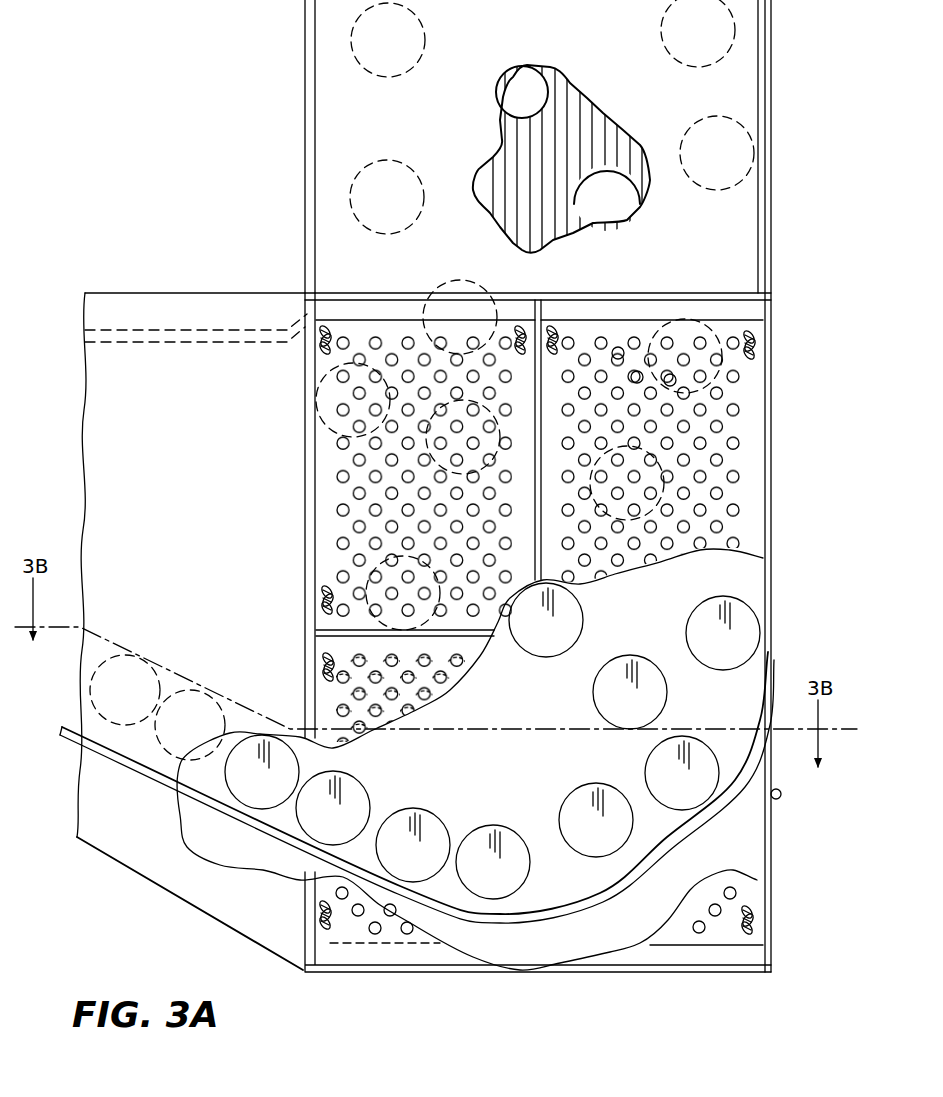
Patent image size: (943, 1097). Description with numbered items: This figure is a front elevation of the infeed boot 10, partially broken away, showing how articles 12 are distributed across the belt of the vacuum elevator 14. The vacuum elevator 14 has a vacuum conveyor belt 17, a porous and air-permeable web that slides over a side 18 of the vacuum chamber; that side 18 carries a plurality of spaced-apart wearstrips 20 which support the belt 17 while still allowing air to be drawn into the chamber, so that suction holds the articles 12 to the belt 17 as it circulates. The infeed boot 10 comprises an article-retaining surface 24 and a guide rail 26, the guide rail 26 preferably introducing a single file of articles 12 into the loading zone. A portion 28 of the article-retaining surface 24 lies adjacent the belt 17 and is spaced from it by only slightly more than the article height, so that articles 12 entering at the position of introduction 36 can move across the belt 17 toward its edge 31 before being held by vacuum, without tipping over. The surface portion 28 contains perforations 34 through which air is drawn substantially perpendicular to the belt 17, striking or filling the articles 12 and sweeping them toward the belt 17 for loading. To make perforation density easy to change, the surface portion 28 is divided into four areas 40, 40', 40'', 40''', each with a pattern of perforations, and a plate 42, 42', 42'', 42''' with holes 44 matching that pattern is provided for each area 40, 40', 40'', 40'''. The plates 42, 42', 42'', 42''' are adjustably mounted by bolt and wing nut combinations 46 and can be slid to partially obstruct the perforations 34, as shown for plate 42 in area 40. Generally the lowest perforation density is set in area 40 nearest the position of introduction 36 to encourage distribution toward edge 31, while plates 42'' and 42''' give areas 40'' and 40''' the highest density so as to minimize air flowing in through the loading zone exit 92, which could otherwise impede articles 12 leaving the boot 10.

The infeed boot 10 is at (200, 912).
The articles 12 is at (518, 100).
The vacuum elevator 14 is at (770, 192).
The vacuum conveyor belt 17 is at (400, 108).
The side 18 is at (603, 130).
The wearstrips 20 is at (598, 173).
The article-retaining surface 24 is at (171, 485).
The guide rail 26 is at (62, 727).
The article-retaining surface portion 28 is at (418, 305).
The edge 31 is at (771, 799).
The perforations 34 is at (307, 713).
The position of introduction 36 is at (282, 847).
The area 40 is at (385, 949).
The area 40' is at (761, 880).
The area 40'' is at (693, 463).
The area 40''' is at (372, 477).
The plate 42 is at (539, 995).
The plate 42' is at (734, 915).
The plate 42'' is at (680, 440).
The plate 42''' is at (369, 565).
The holes 44 is at (670, 380).
The bolt and wing nut combinations 46 is at (320, 344).
The loading zone exit 92 is at (725, 290).